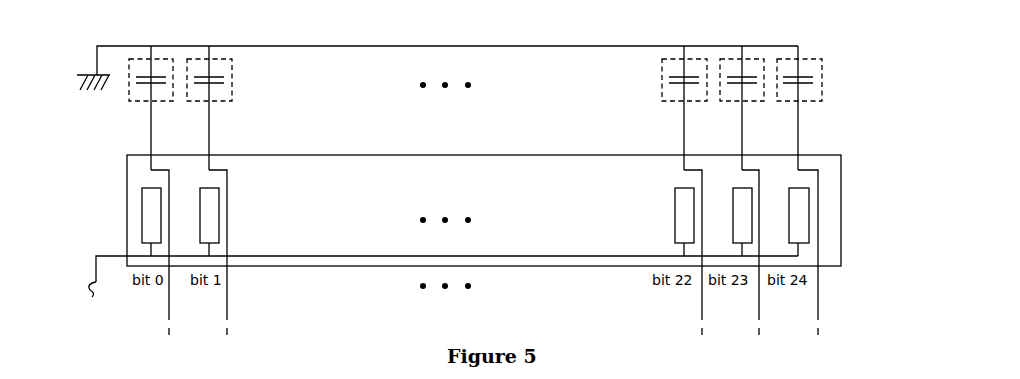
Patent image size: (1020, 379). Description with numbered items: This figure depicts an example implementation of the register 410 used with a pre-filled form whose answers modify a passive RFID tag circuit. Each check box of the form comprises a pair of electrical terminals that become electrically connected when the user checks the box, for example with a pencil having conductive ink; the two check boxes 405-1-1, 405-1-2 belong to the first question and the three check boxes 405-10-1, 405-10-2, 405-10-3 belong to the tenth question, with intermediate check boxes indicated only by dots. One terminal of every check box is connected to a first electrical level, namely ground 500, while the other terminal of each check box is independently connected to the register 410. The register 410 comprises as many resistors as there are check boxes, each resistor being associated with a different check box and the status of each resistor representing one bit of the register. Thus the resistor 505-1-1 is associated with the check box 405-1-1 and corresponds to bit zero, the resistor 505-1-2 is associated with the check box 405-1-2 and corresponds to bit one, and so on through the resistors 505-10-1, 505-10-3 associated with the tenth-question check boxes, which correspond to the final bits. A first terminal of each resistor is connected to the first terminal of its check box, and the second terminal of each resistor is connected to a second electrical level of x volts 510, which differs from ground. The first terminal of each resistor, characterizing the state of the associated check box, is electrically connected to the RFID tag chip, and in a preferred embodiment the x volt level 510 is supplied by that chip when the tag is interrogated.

The ground 500 is at (92, 75).
The check box 405-1-1 is at (145, 102).
The check box 405-1-2 is at (215, 102).
The check box 405-10-1 is at (664, 90).
The check box 405-10-2 is at (756, 58).
The check box 405-10-3 is at (820, 101).
The register 410 is at (504, 155).
The resistor 505-1-1 is at (142, 215).
The resistor 505-1-2 is at (272, 209).
The resistor 505-10-1 is at (676, 225).
The resistor 505-10-3 is at (810, 216).
The second electrical level x V 510 is at (81, 298).